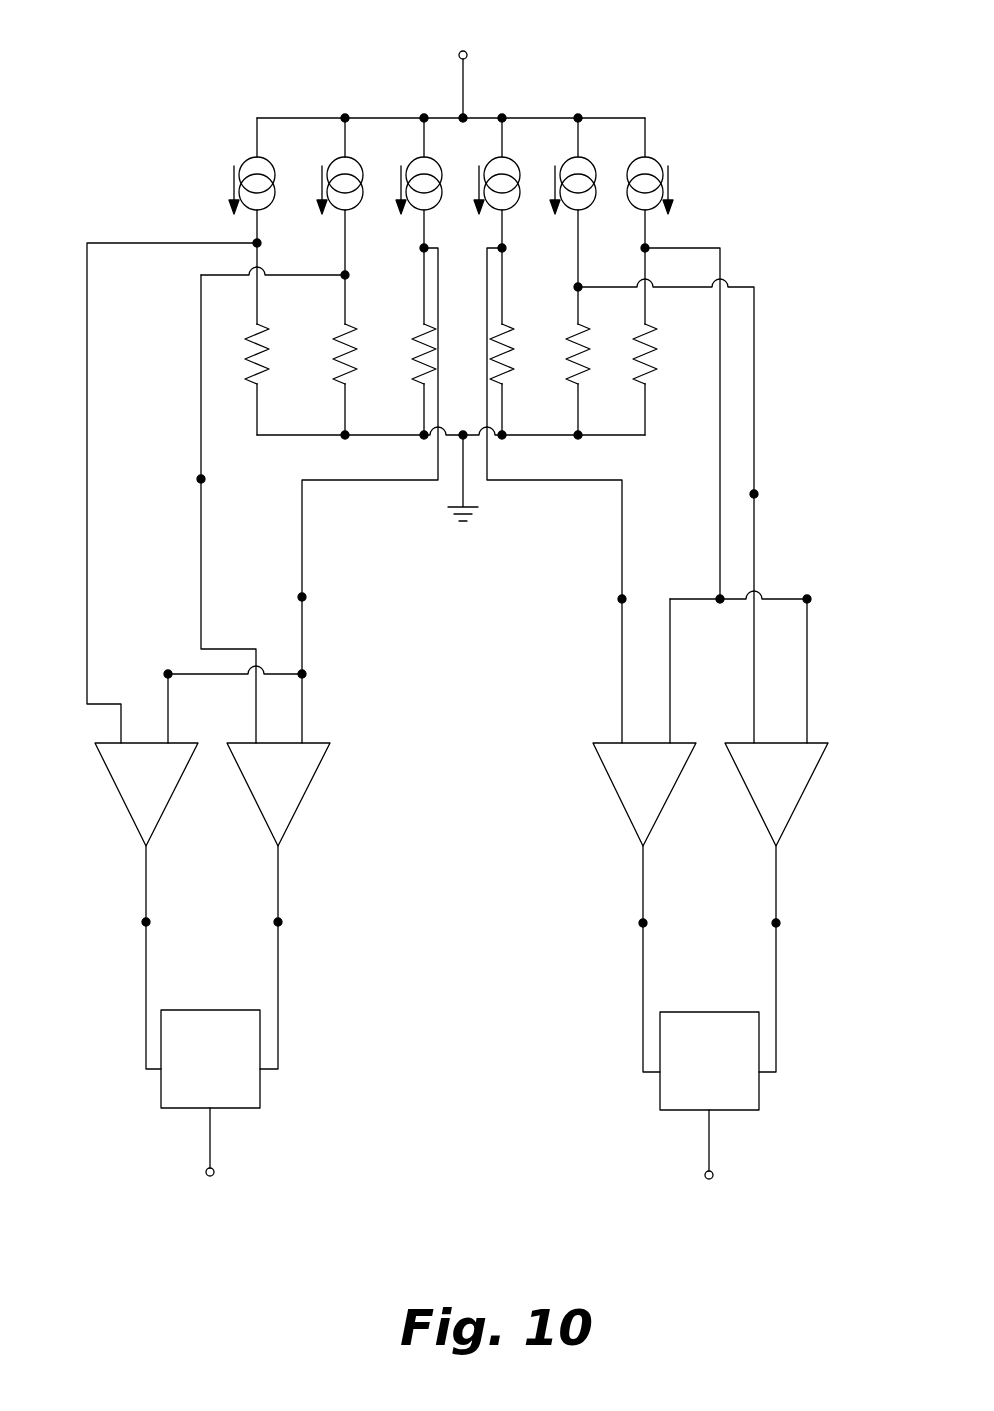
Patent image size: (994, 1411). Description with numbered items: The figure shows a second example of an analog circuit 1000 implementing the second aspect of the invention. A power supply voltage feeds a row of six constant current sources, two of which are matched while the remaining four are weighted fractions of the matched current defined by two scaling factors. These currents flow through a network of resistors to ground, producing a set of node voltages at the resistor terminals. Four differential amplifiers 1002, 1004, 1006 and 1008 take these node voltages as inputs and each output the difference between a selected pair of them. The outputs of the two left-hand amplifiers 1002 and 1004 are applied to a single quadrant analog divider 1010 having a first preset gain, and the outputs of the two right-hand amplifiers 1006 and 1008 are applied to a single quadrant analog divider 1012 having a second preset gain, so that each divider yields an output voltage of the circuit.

The analog circuit 1000 is at (176, 140).
The differential amplifier 1002 is at (120, 794).
The differential amplifier 1004 is at (262, 813).
The differential amplifier 1006 is at (659, 815).
The differential amplifier 1008 is at (800, 798).
The single quadrant analog divider 1010 is at (161, 1087).
The single quadrant analog divider 1012 is at (759, 1088).